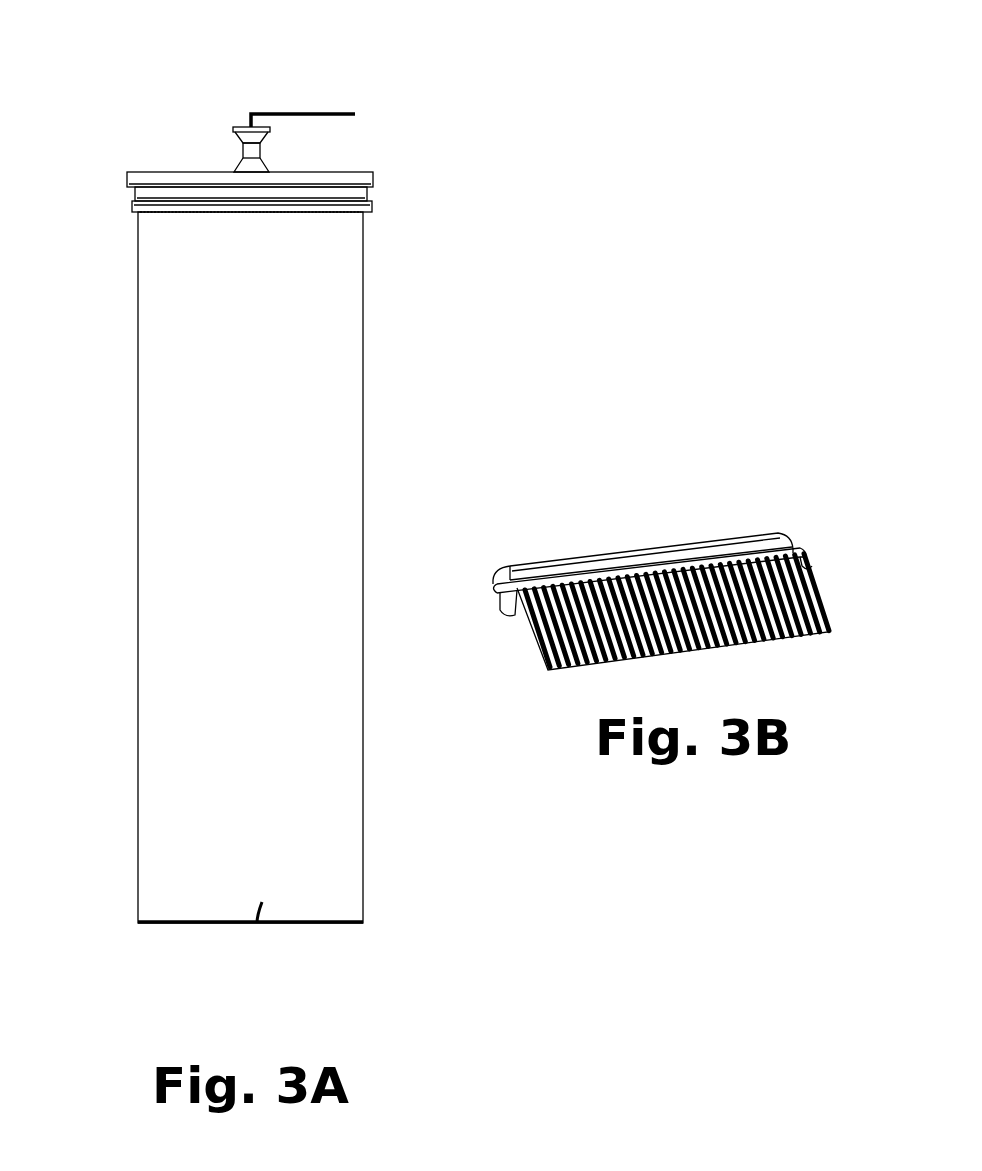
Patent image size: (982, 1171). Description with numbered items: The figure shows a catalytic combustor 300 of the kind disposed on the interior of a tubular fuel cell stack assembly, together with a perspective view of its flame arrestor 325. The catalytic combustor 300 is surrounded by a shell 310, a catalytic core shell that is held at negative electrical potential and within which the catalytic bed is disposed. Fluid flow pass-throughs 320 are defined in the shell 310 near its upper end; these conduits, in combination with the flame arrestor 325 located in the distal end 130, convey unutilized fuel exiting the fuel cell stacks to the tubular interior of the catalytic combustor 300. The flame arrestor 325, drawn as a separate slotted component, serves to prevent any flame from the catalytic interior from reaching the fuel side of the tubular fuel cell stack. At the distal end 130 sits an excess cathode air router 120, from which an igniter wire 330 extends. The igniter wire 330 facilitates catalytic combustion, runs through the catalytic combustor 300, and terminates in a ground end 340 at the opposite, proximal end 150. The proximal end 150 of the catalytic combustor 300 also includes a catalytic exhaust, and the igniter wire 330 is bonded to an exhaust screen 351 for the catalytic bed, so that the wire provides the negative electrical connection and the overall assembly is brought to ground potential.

In FIG. 3A, the catalytic combustor 300 is at (271, 525).
In FIG. 3A, the shell 310 is at (138, 325).
In FIG. 3A, the pass-throughs 320 is at (335, 215).
In FIG. 3A, the distal end 130 is at (108, 224).
In FIG. 3A, the excess cathode air router 120 is at (240, 130).
In FIG. 3A, the igniter wire 330 is at (284, 112).
In FIG. 3A, the ground end 340 is at (263, 927).
In FIG. 3A, the exhaust screen 351 is at (212, 934).
In FIG. 3A, the proximal end 150 is at (400, 927).
In FIG. 3B, the flame arrestor 325 is at (809, 585).